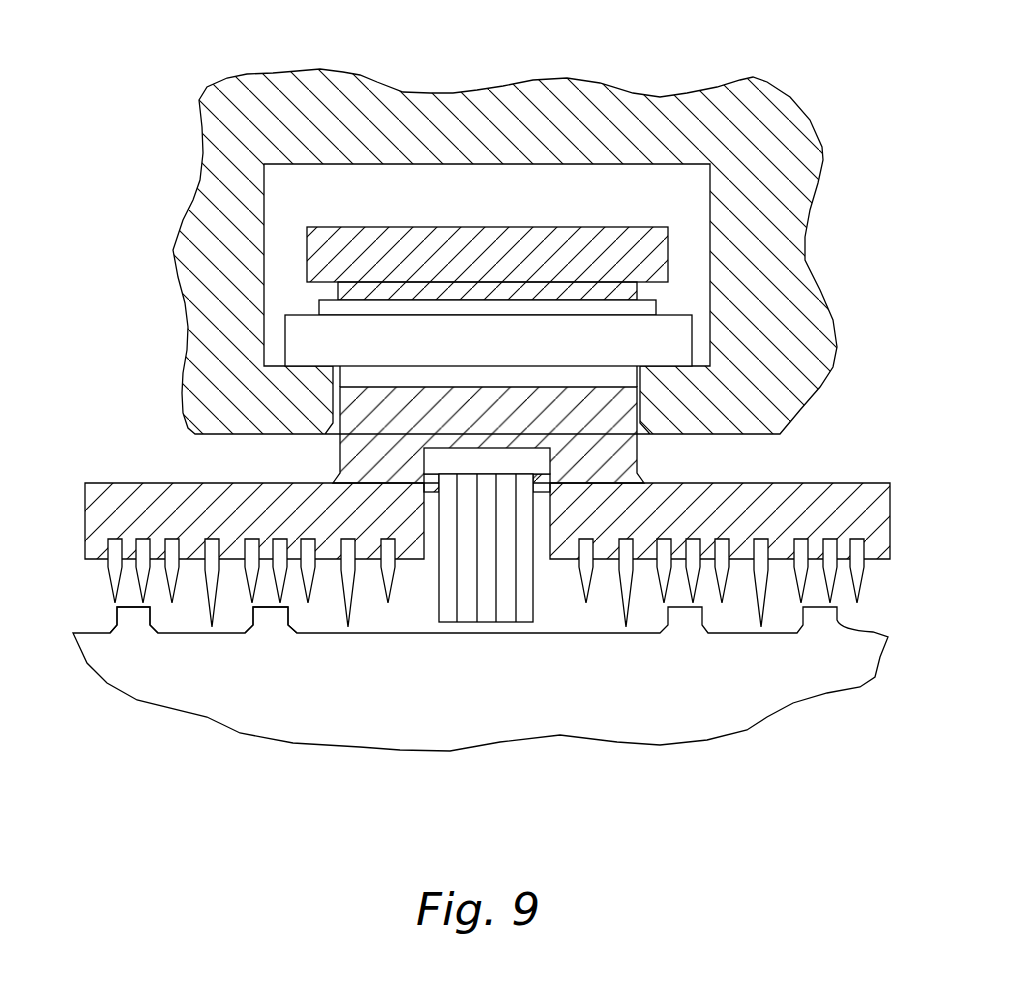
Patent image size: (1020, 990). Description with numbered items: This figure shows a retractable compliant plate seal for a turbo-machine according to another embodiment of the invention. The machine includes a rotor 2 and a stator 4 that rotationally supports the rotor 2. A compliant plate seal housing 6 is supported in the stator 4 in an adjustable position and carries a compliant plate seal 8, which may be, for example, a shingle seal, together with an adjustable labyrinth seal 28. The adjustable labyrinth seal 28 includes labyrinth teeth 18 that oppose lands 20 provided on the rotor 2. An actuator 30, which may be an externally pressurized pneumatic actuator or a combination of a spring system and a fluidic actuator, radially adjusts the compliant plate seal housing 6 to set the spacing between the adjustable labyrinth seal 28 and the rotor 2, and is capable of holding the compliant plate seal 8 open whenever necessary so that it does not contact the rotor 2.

The rotor 2 is at (647, 680).
The stator 4 is at (547, 108).
The compliant plate seal housing 6 is at (598, 250).
The compliant plate seal 8 is at (484, 592).
The labyrinth teeth 18 is at (115, 573).
The lands 20 is at (270, 620).
The adjustable labyrinth seal 28 is at (772, 508).
The actuator 30 is at (313, 345).